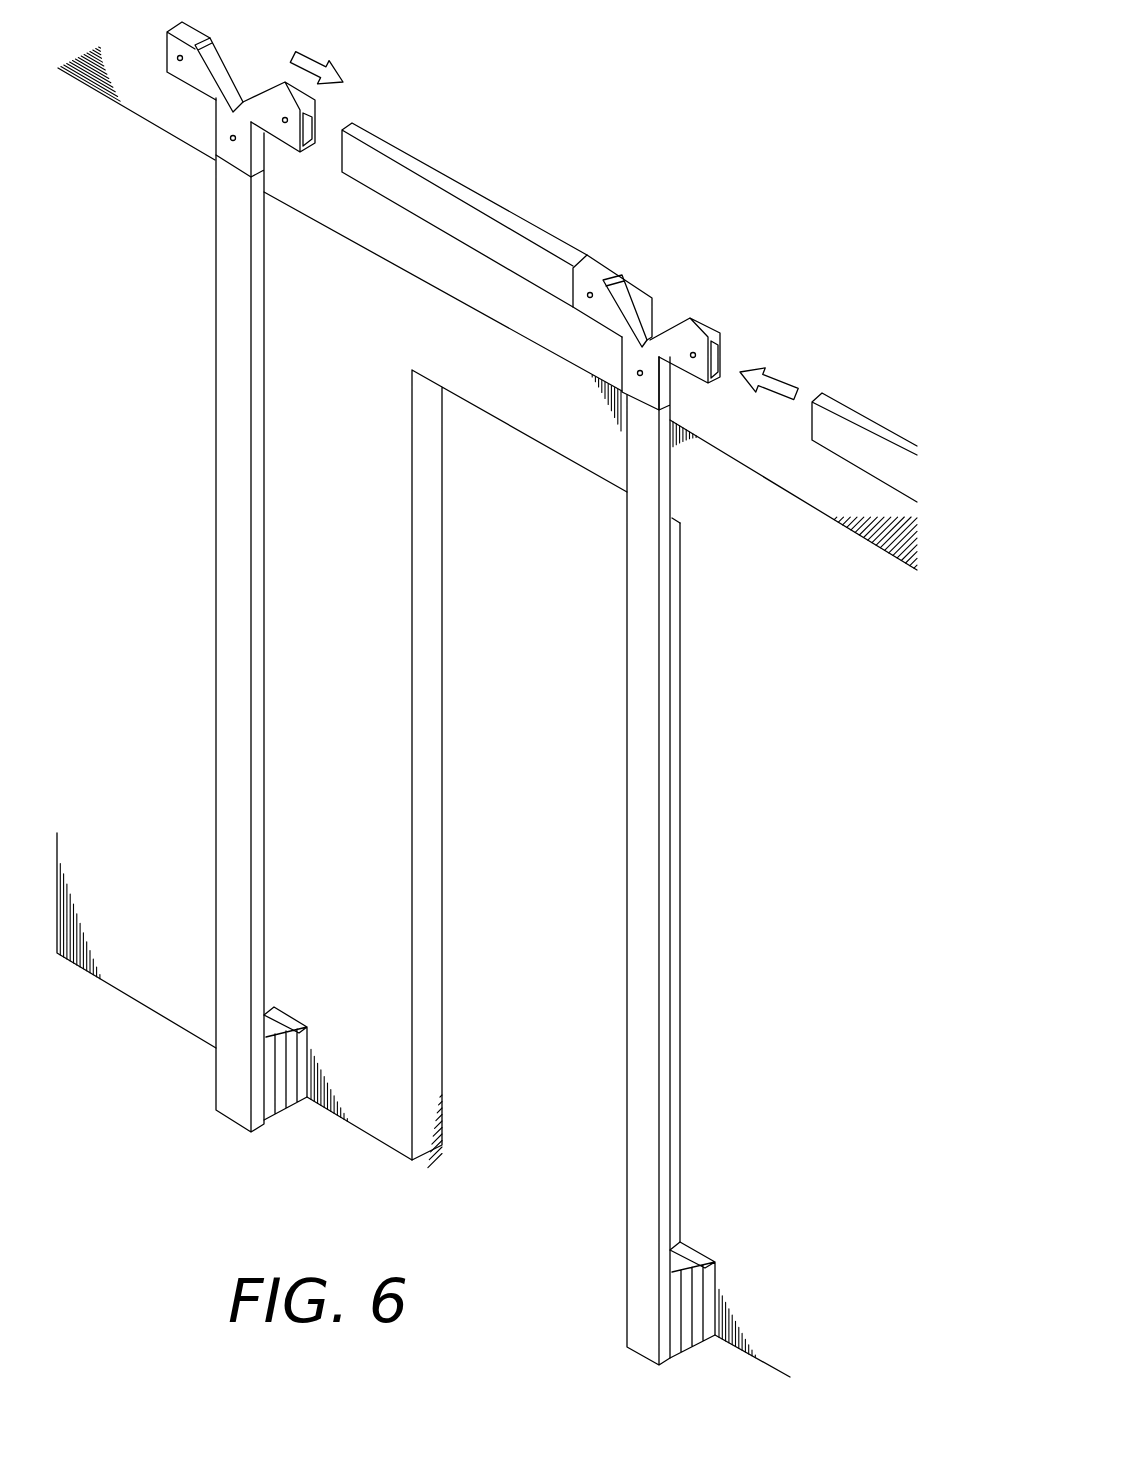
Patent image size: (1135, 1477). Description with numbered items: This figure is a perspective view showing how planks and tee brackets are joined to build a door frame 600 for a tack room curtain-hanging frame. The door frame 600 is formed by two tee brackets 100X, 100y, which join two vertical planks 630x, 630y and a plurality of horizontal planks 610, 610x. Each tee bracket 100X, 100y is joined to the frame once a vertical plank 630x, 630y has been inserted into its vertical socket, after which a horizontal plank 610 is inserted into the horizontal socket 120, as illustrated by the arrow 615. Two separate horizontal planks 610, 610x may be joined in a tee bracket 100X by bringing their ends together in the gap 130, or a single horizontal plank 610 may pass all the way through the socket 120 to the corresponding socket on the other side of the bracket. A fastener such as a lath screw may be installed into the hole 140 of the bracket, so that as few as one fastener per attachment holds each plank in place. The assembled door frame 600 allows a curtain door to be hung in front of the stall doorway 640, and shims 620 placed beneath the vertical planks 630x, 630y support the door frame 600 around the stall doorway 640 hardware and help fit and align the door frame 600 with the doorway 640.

The tee bracket 100y is at (224, 43).
The tee bracket 100X is at (715, 315).
The door frame 600 is at (652, 162).
The horizontal plank 610x is at (504, 207).
The horizontal plank 610 is at (881, 426).
The arrow 615 is at (796, 379).
The horizontal socket 120 is at (715, 381).
The gap 130 is at (672, 307).
The hole 140 is at (701, 355).
The shim 620 is at (711, 1289).
The vertical plank 630x is at (679, 937).
The vertical plank 630y is at (215, 633).
The stall doorway 640 is at (435, 836).